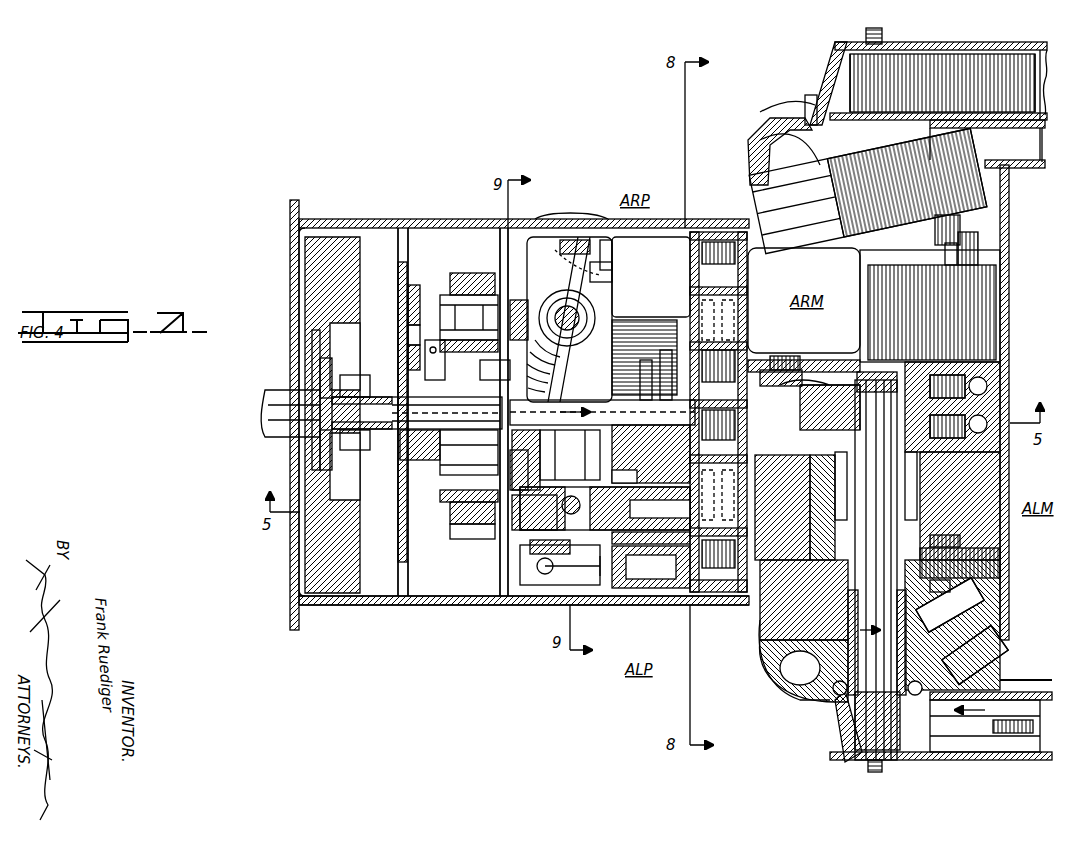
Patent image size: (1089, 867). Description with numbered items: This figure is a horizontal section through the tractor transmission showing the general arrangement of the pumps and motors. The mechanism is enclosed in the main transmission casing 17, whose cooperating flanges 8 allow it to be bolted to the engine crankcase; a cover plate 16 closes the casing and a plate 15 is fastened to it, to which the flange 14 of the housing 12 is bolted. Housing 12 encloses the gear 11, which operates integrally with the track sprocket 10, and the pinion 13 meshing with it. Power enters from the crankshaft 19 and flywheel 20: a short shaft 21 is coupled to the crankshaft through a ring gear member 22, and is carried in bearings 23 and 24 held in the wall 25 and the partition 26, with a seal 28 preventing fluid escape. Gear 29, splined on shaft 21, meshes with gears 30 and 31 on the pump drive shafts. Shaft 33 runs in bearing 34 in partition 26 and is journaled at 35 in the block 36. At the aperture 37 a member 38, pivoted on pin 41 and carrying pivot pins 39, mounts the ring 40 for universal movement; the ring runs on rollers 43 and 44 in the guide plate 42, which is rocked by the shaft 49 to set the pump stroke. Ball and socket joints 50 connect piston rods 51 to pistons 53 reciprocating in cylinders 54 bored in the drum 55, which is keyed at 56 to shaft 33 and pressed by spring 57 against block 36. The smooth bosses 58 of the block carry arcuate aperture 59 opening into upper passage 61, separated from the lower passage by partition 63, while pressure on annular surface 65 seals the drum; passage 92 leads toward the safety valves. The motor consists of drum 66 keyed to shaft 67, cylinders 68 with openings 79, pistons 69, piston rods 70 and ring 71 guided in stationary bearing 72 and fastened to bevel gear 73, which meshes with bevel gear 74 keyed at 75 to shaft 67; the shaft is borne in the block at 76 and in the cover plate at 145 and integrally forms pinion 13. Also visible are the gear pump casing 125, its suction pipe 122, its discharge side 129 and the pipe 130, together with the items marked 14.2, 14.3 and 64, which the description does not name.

The cooperating flanges 8 is at (299, 622).
The sprocket 10 is at (612, 418).
The gear 11 is at (1020, 75).
The housing 12 is at (992, 50).
The pinion 13 is at (835, 75).
The flange 14 is at (805, 108).
The flange bolt 14.2 is at (312, 430).
The flange nut 14.3 is at (335, 440).
The bearing in cover plate 145 is at (760, 705).
The plate 15 is at (1035, 135).
The cover plate 16 is at (1030, 150).
The main transmission casing 17 is at (395, 605).
The crankshaft 19 is at (275, 392).
The flywheel 20 is at (318, 290).
The short shaft 21 is at (445, 440).
The ring gear member 22 is at (335, 380).
The bearing 23 is at (395, 390).
The bearing 24 is at (512, 395).
The wall 25 is at (398, 247).
The partition 26 is at (483, 232).
The seal 28 is at (400, 440).
The gear 29 is at (450, 470).
The gear 30 is at (460, 275).
The gear 31 is at (455, 530).
The shaft 33 is at (520, 310).
The bearing 34 is at (478, 272).
The journal 35 is at (709, 453).
The block 36 is at (708, 240).
The aperture 37 is at (525, 552).
The member 38 is at (605, 508).
The pivot pins 39 is at (651, 455).
The ring 40 is at (575, 240).
The pin 41 is at (525, 525).
The guide plate 42 is at (567, 240).
The roller 43 is at (530, 455).
The roller 44 is at (520, 596).
The shaft 49 is at (560, 300).
The ball and socket joints 50 is at (600, 268).
The piston rods 51 is at (604, 240).
The piston 53 is at (648, 362).
The cylinder 54 is at (645, 322).
The drum 55 is at (648, 590).
The key 56 is at (640, 508).
The spring 57 is at (651, 537).
The bosses 58 is at (690, 246).
The arcuate aperture 59 is at (666, 352).
The upper passage 61 is at (724, 410).
The partition 63 is at (800, 370).
The shaft end 64 is at (621, 419).
The annular surface 65 is at (649, 419).
The drum 66 is at (1010, 300).
The shaft 67 is at (845, 390).
The cylinders 68 is at (745, 545).
The pistons 69 is at (978, 250).
The piston rods 70 is at (960, 215).
The ring 71 is at (990, 625).
The stationary bearing 72 is at (770, 180).
The bevel gear 73 is at (855, 195).
The bevel gear 74 is at (960, 240).
The key 75 is at (877, 570).
The bearing in block 76 is at (900, 395).
The openings 79 is at (792, 356).
The upwardly extending passage 92 is at (988, 386).
The suction pipe 122 is at (572, 335).
The casing 125 is at (408, 345).
The discharge side of gear pump 129 is at (408, 300).
The pipe 130 is at (433, 345).